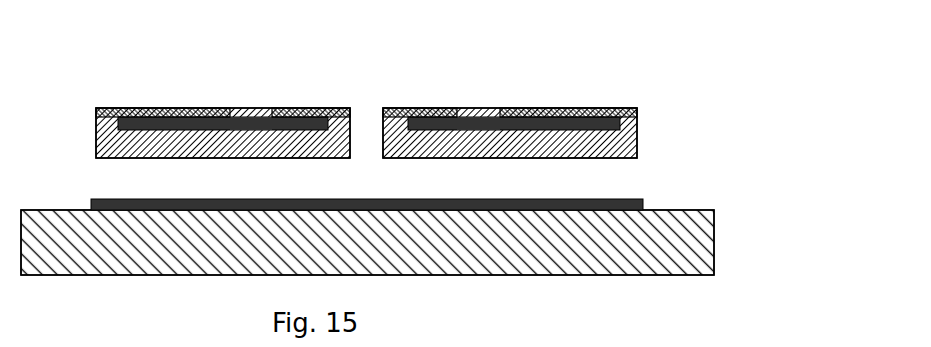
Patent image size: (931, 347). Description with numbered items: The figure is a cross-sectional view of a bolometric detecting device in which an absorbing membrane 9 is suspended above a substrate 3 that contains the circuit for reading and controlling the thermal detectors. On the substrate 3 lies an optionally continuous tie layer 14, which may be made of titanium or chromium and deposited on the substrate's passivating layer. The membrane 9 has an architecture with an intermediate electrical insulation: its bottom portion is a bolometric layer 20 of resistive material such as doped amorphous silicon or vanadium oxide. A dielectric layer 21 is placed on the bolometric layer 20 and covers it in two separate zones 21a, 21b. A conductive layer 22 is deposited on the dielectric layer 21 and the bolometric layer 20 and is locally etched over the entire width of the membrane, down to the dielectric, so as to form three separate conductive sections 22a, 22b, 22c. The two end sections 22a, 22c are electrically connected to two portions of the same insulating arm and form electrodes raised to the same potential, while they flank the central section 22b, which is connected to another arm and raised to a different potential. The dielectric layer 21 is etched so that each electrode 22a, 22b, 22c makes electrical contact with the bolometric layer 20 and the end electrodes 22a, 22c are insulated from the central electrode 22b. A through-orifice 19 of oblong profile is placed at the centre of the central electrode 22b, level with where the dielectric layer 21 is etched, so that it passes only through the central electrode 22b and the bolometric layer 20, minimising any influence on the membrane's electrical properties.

The substrate 3 is at (735, 250).
The tie layer 14 is at (643, 205).
The absorbing membrane 9 is at (440, 112).
The bolometric layer 20 is at (638, 140).
The dielectric layer 21 is at (369, 81).
The dielectric zone 21a is at (251, 117).
The dielectric zone 21b is at (475, 117).
The conductive layer 22 is at (440, 87).
The end conductive section 22a is at (567, 108).
The central conductive section 22b is at (313, 107).
The end conductive section 22c is at (160, 107).
The through-orifice 19 is at (375, 94).